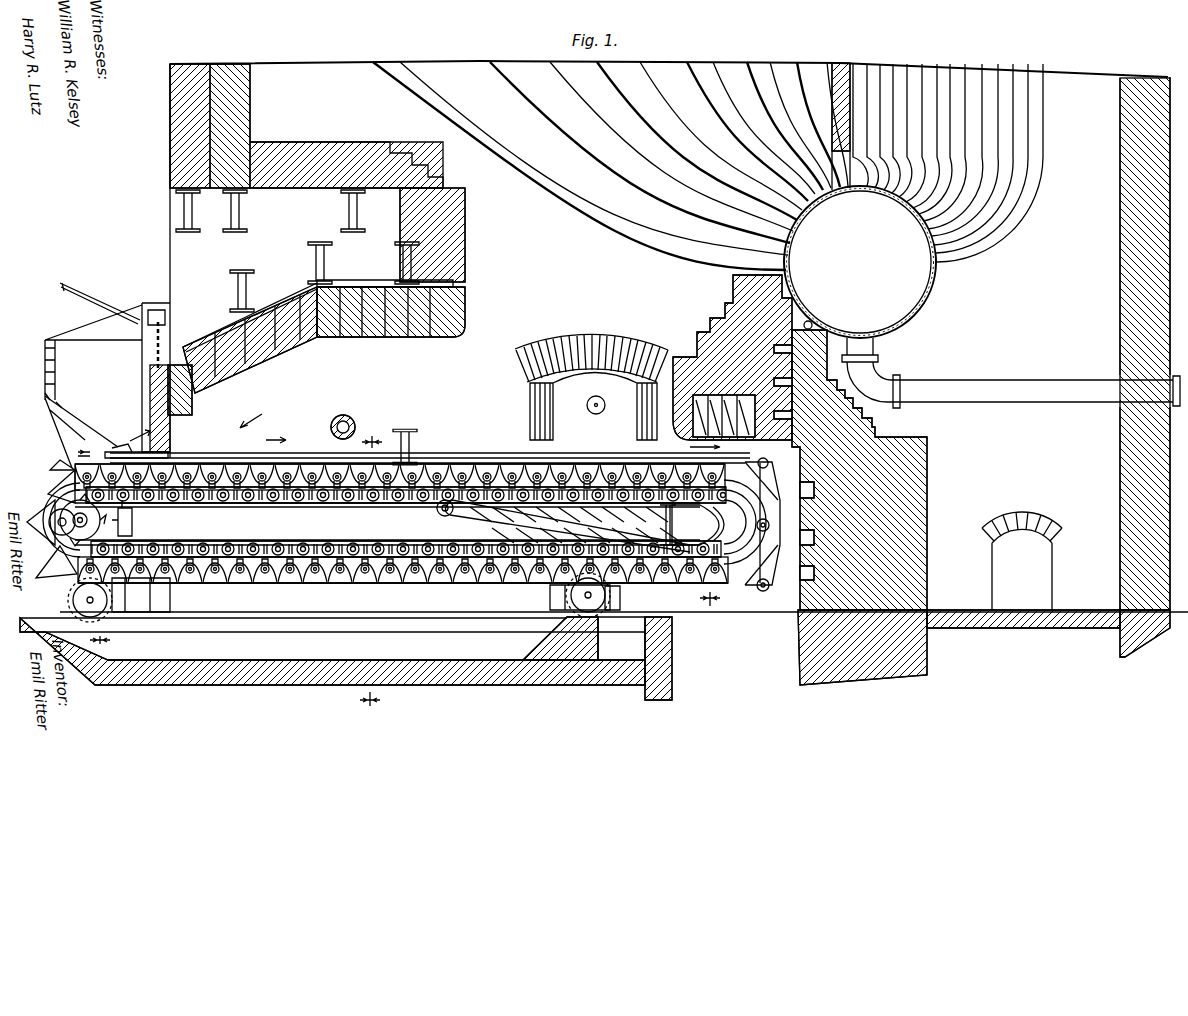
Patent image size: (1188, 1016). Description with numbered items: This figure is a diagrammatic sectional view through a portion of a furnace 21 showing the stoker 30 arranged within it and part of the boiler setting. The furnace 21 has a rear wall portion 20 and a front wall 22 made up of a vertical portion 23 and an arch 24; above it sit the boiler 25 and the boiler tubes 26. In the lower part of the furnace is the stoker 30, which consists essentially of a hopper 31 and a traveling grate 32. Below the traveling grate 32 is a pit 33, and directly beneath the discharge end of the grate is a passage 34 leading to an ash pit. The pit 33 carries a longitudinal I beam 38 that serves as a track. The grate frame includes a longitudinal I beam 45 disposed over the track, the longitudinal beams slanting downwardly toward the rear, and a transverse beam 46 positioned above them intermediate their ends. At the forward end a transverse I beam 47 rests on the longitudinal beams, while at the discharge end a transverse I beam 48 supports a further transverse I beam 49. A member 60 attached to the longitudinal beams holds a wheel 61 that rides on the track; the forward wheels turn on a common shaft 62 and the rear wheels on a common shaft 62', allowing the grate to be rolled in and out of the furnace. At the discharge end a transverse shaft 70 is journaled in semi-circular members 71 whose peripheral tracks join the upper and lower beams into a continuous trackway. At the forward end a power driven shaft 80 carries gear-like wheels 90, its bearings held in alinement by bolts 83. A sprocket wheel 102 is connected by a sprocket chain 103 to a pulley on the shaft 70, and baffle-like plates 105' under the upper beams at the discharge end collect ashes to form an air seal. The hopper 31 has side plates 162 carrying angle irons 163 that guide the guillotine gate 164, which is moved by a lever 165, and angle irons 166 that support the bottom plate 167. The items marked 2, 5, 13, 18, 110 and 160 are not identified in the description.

The direction arrow 2 is at (372, 433).
The direction arrow 5 is at (540, 574).
The direction arrow 13 is at (100, 647).
The direction arrow 18 is at (81, 445).
The rear wall portion 20 is at (690, 345).
The furnace 21 is at (152, 150).
The front wall 22 is at (453, 280).
The vertical portion 23 is at (468, 316).
The arch 24 is at (376, 337).
The boiler 25 is at (925, 290).
The boiler tubes 26 is at (1025, 220).
The stoker 30 is at (208, 422).
The hopper 31 is at (52, 328).
The traveling grate 32 is at (325, 583).
The pit 33 is at (290, 672).
The passage 34 is at (625, 658).
The longitudinal I beam (track) 38 is at (486, 632).
The longitudinal I beam 45 is at (302, 546).
The transverse beam 46 is at (393, 480).
The transverse I beam 47 is at (122, 528).
The transverse I beam 48 is at (672, 530).
The transverse I beam 49 is at (662, 512).
The member 60 is at (75, 583).
The wheel 61 is at (90, 600).
The common shaft 62 is at (135, 595).
The common shaft 62' is at (621, 638).
The transverse shaft 70 is at (758, 588).
The semi-circular member 71 is at (766, 535).
The power driven shaft 80 is at (70, 480).
The bolt 83 is at (134, 516).
The gear-like wheel 90 is at (40, 510).
The sprocket wheel 102 is at (444, 516).
The sprocket chain 103 is at (500, 522).
The baffle-like plate 105' is at (576, 525).
The side rail 110 is at (462, 460).
The bearing 160 is at (622, 598).
The side plate 162 is at (146, 312).
The angle iron 163 is at (142, 380).
The guillotine gate 164 is at (168, 442).
The lever 165 is at (100, 290).
The angle iron 166 is at (60, 400).
The bottom plate 167 is at (85, 418).